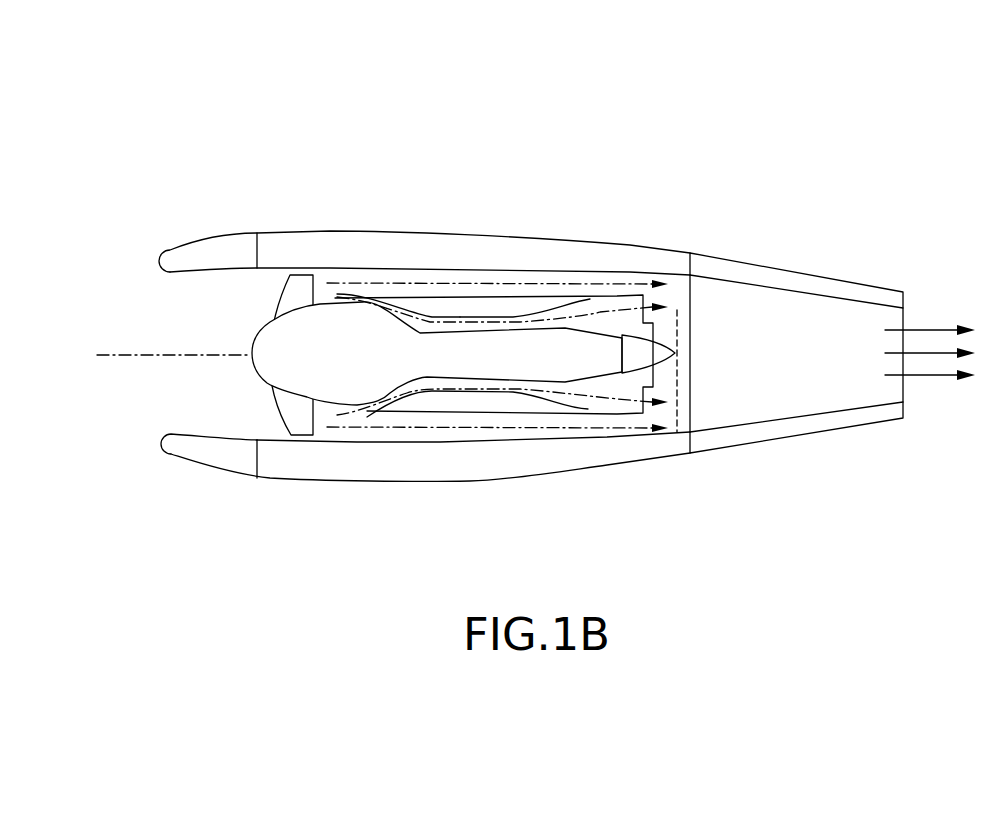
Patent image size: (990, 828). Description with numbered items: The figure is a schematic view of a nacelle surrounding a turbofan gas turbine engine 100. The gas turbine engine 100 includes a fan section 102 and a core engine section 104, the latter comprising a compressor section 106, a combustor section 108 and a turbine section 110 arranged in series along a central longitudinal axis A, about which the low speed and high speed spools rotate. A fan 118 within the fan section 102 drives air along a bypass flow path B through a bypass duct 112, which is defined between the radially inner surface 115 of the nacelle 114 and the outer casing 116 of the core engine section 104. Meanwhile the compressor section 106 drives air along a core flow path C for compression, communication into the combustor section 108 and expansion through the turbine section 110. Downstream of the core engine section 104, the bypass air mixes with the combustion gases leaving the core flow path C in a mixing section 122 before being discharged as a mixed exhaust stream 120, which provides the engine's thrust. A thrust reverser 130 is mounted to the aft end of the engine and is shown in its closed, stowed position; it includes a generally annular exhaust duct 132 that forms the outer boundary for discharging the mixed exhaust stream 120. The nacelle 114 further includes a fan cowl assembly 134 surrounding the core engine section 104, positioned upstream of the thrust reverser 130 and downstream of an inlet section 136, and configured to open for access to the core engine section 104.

The gas turbine engine 100 is at (170, 176).
The fan section 102 is at (245, 300).
The core engine section 104 is at (389, 336).
The compressor section 106 is at (418, 290).
The combustor section 108 is at (513, 292).
The turbine section 110 is at (598, 272).
The bypass duct 112 is at (413, 440).
The nacelle 114 is at (272, 459).
The radially inner surface 115 is at (467, 442).
The outer casing 116 is at (513, 412).
The fan 118 is at (283, 420).
The mixed exhaust stream 120 is at (948, 328).
The mixing section 122 is at (677, 291).
The thrust reverser 130 is at (793, 214).
The exhaust duct 132 is at (891, 421).
The fan cowl assembly 134 is at (565, 467).
The inlet section 136 is at (210, 455).
The central longitudinal axis A is at (178, 355).
The bypass flow path B is at (367, 427).
The core flow path C is at (612, 403).